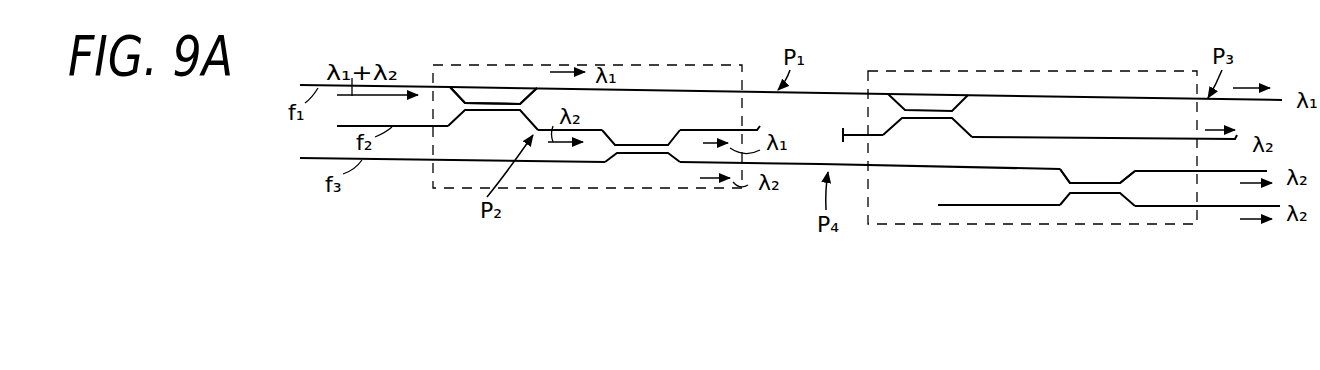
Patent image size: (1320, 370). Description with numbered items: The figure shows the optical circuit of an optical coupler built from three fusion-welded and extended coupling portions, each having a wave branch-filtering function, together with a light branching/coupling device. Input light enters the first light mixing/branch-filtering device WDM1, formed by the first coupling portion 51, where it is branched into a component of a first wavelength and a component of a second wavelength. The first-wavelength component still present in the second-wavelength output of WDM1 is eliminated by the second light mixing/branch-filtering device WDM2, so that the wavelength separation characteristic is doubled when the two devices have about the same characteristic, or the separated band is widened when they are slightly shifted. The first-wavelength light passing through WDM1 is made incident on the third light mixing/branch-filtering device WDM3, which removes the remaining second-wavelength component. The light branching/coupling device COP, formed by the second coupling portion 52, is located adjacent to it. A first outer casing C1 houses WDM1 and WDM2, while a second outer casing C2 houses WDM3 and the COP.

The first coupling portion 51 is at (547, 50).
The second coupling portion 52 is at (1145, 232).
The first light mixing/branch-filtering device WDM1 is at (492, 100).
The second light mixing/branch-filtering device WDM2 is at (632, 142).
The third light mixing/branch-filtering device WDM3 is at (922, 110).
The light branching/coupling device COP is at (1087, 182).
The first outer casing C1 is at (603, 190).
The second outer casing C2 is at (948, 226).